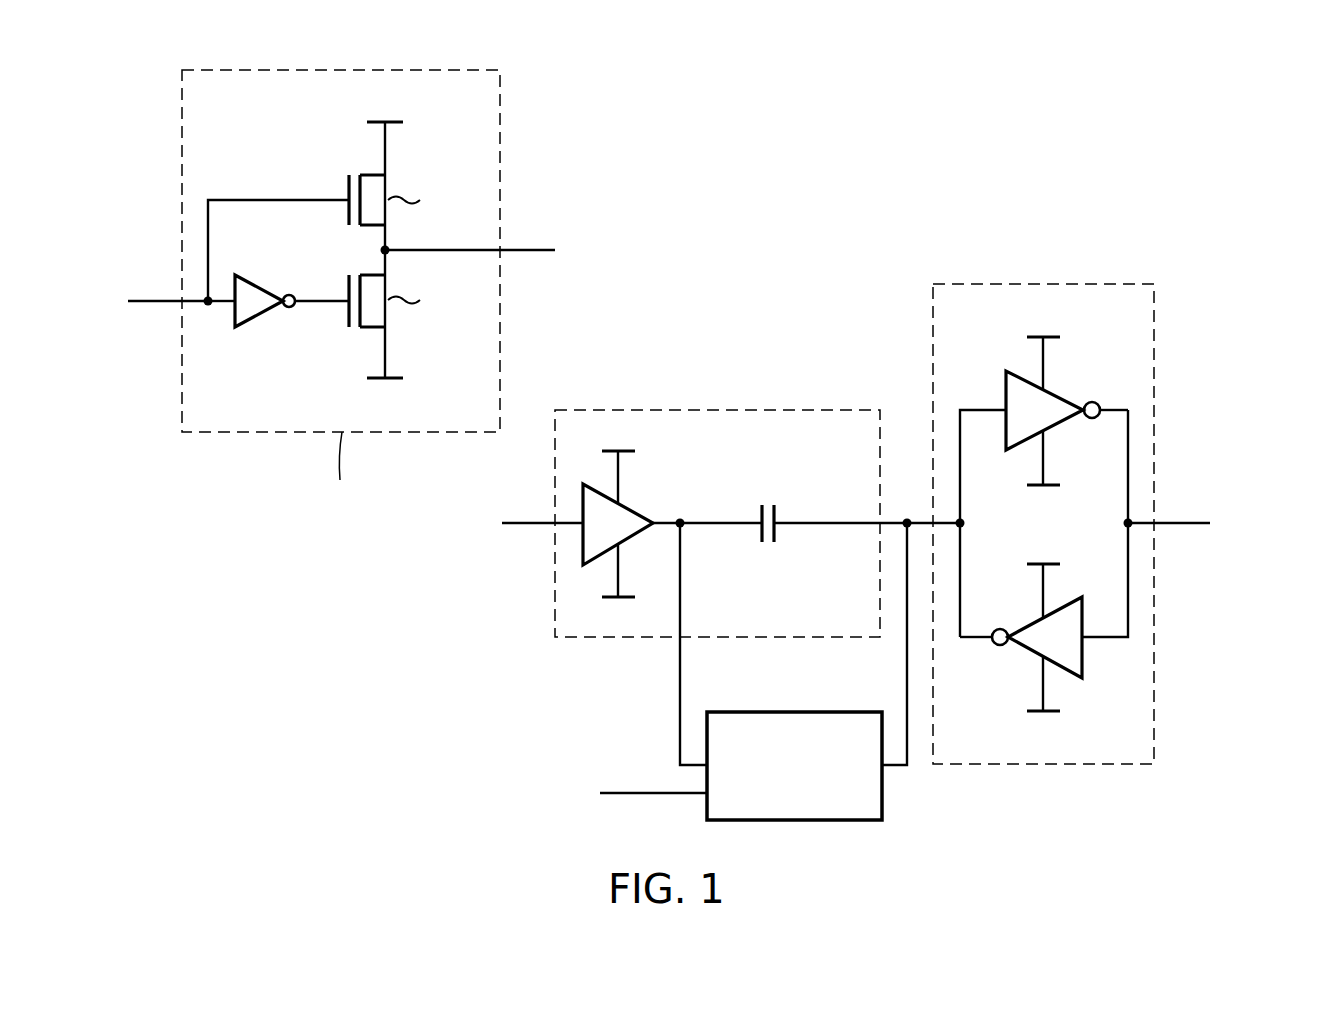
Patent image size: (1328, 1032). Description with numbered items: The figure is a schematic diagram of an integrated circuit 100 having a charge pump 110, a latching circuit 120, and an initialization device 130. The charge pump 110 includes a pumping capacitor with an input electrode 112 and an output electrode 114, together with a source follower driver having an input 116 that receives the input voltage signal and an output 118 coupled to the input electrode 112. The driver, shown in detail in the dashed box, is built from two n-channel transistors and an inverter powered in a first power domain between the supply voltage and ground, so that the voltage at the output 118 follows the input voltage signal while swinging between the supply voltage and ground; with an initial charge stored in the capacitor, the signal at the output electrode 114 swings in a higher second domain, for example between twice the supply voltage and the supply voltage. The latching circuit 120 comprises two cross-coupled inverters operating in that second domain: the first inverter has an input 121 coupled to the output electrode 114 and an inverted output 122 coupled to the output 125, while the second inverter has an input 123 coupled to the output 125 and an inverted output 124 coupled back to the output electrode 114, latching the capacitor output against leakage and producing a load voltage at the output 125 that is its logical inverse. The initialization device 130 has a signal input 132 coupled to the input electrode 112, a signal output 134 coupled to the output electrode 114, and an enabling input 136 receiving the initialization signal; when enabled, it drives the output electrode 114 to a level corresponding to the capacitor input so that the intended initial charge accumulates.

The integrated circuit 100 is at (656, 461).
The charge pump 110 is at (742, 445).
The input electrode 112 is at (759, 532).
The output electrode 114 is at (777, 532).
The input 116 is at (155, 305).
The output 118 is at (653, 523).
The latching circuit 120 is at (1043, 284).
The input 121 is at (1005, 408).
The inverted output 122 is at (1096, 400).
The input 123 is at (1082, 643).
The inverted output 124 is at (997, 648).
The output 125 is at (1132, 520).
The initialization device 130 is at (795, 712).
The signal input 132 is at (696, 762).
The signal output 134 is at (882, 770).
The enabling input 136 is at (705, 795).